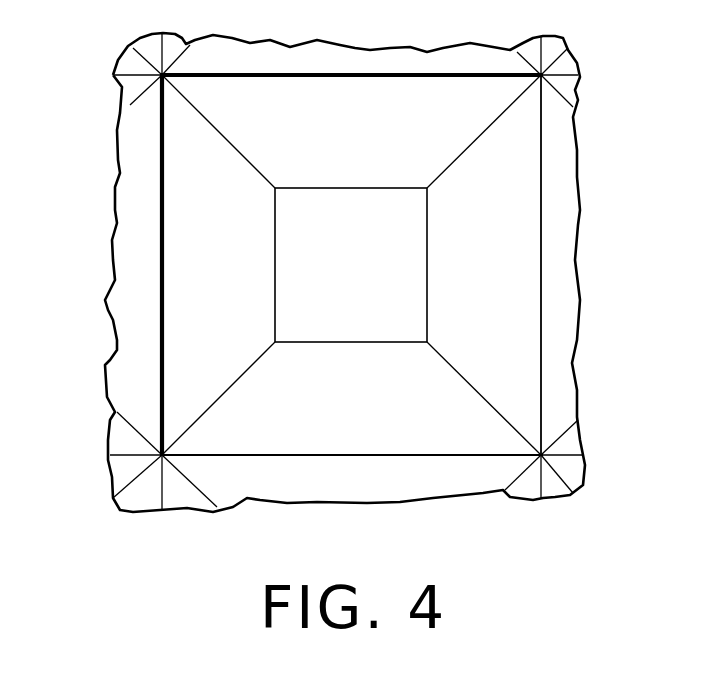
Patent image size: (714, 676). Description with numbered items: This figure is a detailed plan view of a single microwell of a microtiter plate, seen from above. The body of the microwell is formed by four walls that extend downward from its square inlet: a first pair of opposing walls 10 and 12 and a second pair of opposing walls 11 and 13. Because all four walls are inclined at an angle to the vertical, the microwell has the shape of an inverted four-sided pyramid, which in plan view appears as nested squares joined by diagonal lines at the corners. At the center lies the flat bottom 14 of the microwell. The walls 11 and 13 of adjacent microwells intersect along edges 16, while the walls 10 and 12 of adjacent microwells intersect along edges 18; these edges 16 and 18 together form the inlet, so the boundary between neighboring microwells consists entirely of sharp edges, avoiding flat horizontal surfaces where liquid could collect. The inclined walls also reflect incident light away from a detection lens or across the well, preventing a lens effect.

The wall 10 is at (328, 117).
The wall 11 is at (125, 323).
The wall 12 is at (232, 60).
The wall 13 is at (187, 202).
The bottom 14 is at (335, 280).
The edge 16 is at (159, 250).
The edge 18 is at (398, 75).